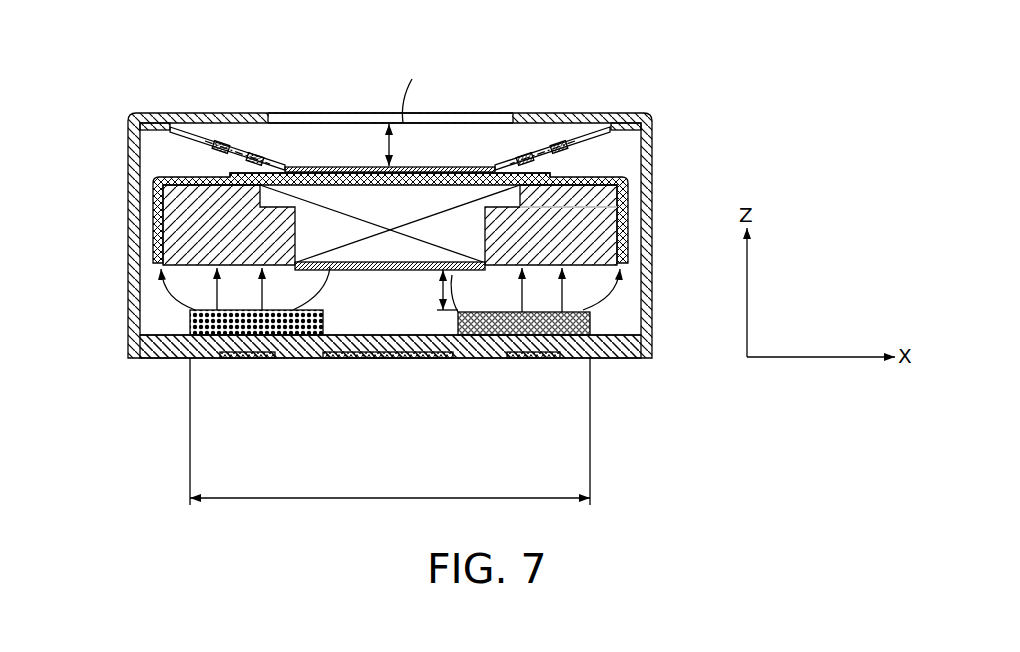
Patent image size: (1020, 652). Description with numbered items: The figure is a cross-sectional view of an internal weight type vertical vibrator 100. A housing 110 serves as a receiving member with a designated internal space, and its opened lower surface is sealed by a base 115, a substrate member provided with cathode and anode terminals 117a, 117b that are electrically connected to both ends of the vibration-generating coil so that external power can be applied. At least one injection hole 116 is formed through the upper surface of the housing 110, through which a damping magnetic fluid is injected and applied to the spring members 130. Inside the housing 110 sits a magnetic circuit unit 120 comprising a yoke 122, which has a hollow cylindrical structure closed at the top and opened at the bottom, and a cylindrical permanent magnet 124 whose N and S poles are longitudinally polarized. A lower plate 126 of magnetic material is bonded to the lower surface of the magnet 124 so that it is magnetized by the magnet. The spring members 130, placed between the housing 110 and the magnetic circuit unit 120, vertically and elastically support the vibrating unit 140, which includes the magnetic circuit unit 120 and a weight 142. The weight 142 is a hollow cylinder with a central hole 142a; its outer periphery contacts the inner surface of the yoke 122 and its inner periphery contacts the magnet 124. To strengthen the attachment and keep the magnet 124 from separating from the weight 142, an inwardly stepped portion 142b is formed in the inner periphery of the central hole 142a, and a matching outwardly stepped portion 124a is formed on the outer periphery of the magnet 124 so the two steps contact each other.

The internal weight type vertical vibrator 100 is at (614, 108).
The housing 110 is at (166, 112).
The base 115 is at (637, 358).
The injection hole 116 is at (505, 122).
The cathode terminal 117a is at (428, 358).
The anode terminal 117b is at (548, 358).
The magnetic circuit unit 120 is at (626, 174).
The yoke 122 is at (450, 200).
The magnet 124 is at (340, 198).
The outwardly stepped portion 124a is at (628, 202).
The lower plate 126 is at (360, 270).
The spring members 130 is at (228, 136).
The vibrating unit 140 is at (385, 254).
The weight 142 is at (173, 232).
The central hole 142a is at (520, 266).
The inwardly stepped portion 142b is at (521, 194).